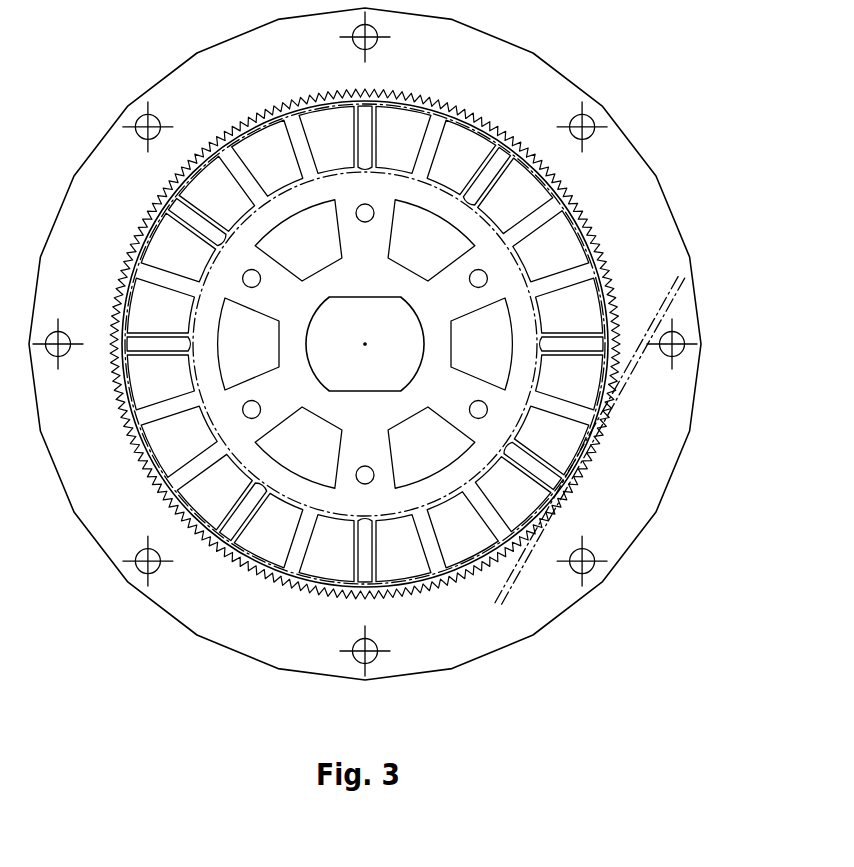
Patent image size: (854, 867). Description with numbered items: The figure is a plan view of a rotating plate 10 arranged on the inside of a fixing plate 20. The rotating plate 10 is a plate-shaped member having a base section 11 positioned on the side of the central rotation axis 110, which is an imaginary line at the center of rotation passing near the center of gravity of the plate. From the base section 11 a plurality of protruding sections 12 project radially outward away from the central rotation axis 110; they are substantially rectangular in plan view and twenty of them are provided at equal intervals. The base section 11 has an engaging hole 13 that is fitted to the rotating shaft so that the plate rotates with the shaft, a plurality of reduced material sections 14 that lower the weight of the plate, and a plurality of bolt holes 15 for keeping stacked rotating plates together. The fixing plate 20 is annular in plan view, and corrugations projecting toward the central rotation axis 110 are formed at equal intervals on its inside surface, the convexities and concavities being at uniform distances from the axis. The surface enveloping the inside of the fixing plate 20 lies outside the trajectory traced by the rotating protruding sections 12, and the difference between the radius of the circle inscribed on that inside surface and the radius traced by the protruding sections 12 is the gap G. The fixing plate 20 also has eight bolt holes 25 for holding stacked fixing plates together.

The rotating plate 10 is at (494, 212).
The base section 11 is at (347, 190).
The protruding section 12 is at (572, 348).
The engaging hole 13 is at (354, 386).
The reduced material section 14 is at (437, 255).
The bolt hole 15 is at (364, 214).
The fixing plate 20 is at (557, 82).
The bolt hole 25 is at (146, 118).
The central rotation axis 110 is at (365, 344).
The gap G is at (584, 458).